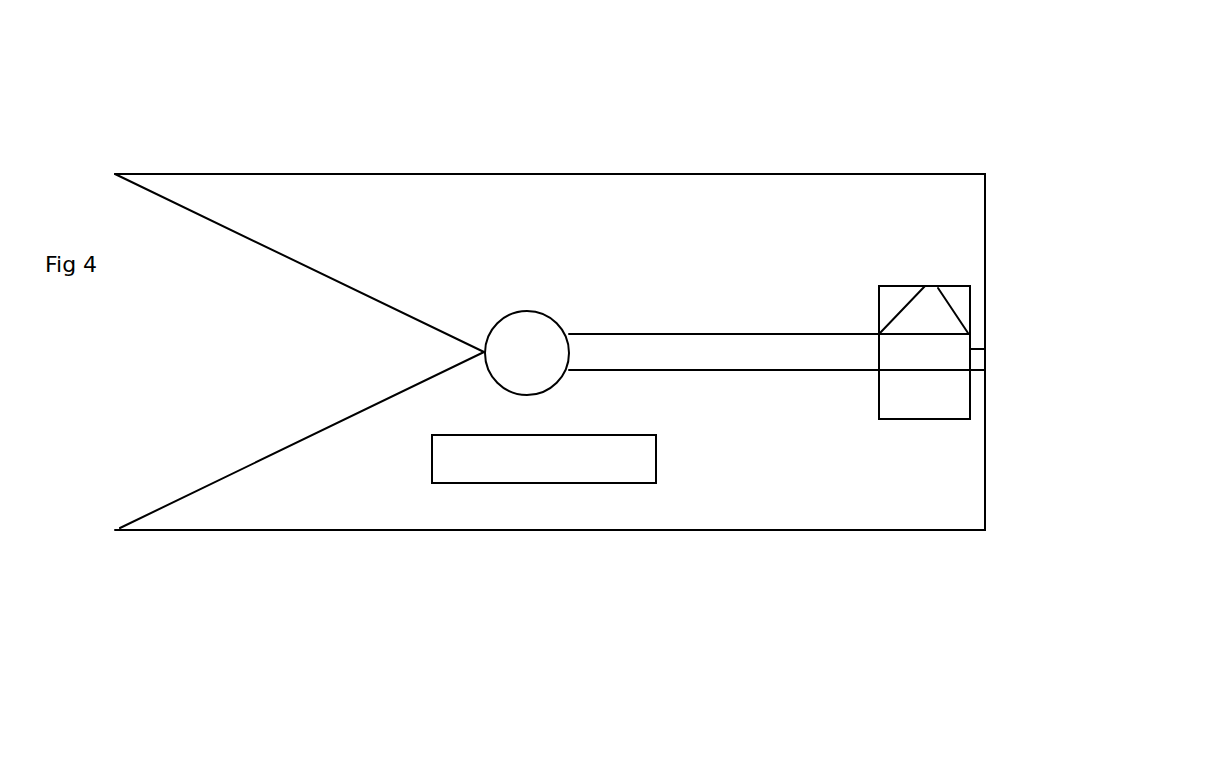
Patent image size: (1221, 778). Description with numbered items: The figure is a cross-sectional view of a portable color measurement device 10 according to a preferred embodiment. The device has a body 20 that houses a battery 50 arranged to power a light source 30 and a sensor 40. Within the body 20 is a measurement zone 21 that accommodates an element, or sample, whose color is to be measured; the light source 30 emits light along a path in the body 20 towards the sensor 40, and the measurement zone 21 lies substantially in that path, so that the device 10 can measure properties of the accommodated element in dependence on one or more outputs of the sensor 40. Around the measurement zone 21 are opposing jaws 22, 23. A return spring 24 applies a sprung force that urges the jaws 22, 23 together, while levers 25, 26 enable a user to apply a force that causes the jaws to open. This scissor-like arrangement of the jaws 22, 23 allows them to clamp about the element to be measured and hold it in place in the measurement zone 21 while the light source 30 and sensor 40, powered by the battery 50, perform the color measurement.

The portable color measurement device 10 is at (663, 385).
The body 20 is at (592, 527).
The measurement zone 21 is at (918, 356).
The jaw 22 is at (930, 263).
The jaw 23 is at (921, 479).
The return spring 24 is at (500, 318).
The lever 25 is at (278, 505).
The lever 26 is at (313, 223).
The light source 30 is at (935, 418).
The sensor 40 is at (895, 295).
The battery 50 is at (482, 483).